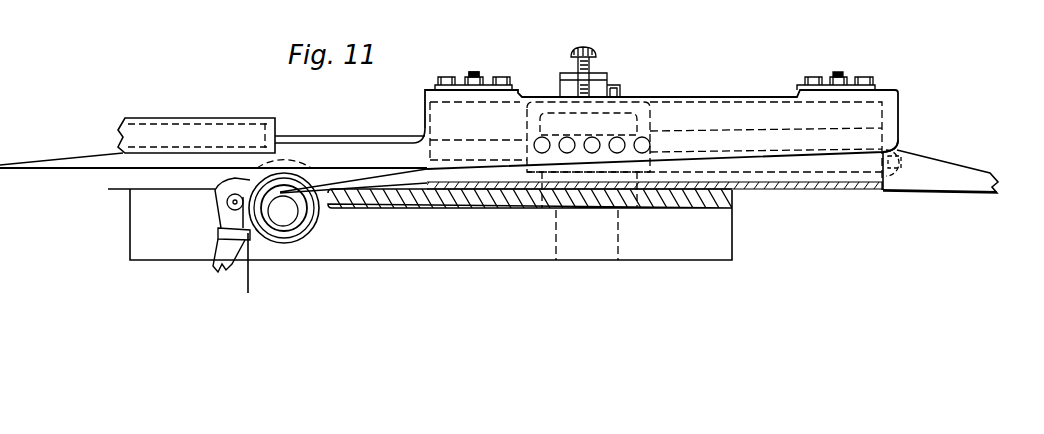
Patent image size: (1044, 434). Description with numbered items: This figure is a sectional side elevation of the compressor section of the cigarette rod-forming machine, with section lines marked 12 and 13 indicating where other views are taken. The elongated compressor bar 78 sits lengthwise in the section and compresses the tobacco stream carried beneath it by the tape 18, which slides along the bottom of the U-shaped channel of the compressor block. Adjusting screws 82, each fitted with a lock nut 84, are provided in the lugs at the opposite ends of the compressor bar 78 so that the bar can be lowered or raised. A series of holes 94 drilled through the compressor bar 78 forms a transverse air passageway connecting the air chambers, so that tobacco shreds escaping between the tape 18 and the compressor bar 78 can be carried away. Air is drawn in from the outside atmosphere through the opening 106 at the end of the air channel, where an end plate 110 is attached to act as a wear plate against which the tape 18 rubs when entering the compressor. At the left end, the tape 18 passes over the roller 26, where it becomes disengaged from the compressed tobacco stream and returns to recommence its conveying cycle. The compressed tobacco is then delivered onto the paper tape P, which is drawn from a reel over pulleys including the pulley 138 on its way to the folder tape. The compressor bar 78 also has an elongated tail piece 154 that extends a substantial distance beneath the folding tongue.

The elongated tail piece 154 is at (38, 163).
The compressor bar 78 is at (703, 113).
The lock nut 84 is at (467, 78).
The adjusting screw 82 is at (475, 75).
The holes 94 is at (639, 137).
The tape 18 is at (272, 222).
The pulley 26 is at (288, 211).
The pulley 138 is at (227, 205).
The paper tape P is at (248, 282).
The opening 106 is at (883, 130).
The end plate 110 is at (917, 157).
The section line 13- 13 is at (583, 10).
The section line 12- 12 is at (898, 58).